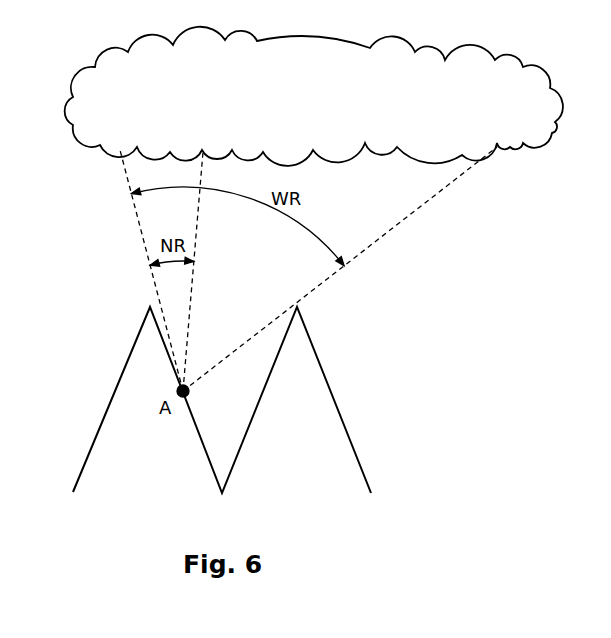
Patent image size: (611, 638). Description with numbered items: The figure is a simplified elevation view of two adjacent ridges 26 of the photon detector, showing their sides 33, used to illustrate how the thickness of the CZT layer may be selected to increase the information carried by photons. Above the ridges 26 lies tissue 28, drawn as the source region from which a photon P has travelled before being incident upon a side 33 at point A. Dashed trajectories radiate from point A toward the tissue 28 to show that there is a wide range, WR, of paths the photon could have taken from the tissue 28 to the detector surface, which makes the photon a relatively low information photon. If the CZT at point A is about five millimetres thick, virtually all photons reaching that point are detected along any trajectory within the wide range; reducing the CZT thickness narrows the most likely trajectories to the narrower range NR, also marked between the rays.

The tissue 28 is at (482, 50).
The ridges 26 is at (148, 306).
The sides 33 is at (208, 453).